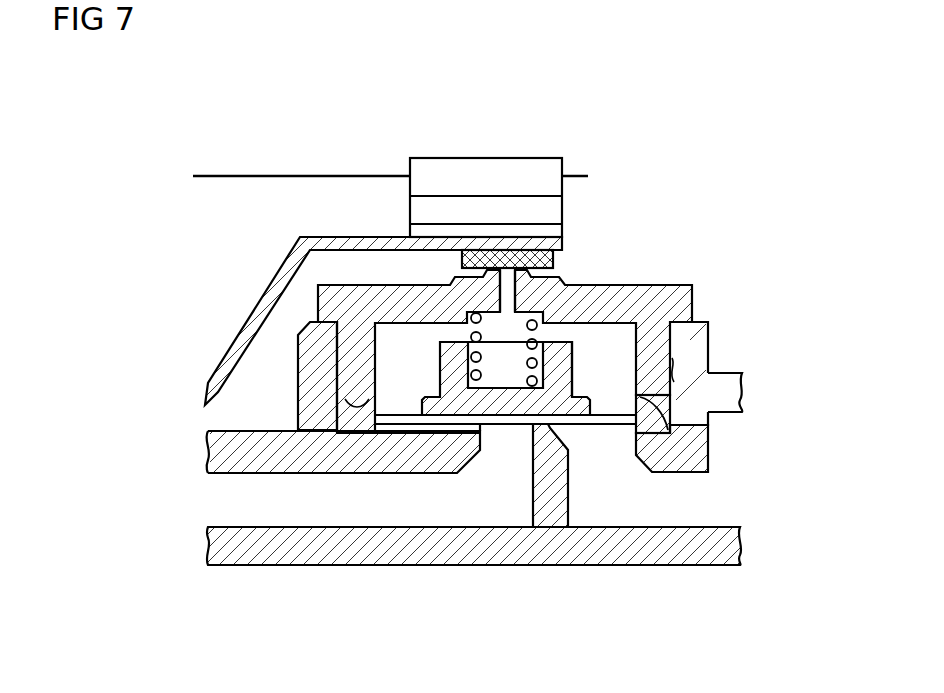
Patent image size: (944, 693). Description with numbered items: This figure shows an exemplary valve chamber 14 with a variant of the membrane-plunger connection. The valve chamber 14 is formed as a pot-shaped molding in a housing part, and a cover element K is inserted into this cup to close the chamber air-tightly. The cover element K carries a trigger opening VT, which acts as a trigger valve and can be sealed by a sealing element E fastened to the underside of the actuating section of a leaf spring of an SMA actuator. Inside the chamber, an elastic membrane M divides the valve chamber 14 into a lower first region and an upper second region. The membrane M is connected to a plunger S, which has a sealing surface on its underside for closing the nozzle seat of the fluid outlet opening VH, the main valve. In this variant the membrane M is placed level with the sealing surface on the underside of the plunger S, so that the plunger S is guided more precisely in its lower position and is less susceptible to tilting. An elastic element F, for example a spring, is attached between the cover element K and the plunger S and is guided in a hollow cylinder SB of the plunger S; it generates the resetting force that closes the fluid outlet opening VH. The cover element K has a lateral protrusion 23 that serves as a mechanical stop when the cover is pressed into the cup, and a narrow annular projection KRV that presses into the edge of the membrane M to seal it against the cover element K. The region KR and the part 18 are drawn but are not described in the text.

The valve chamber 14 is at (636, 171).
The sealing element E is at (488, 257).
The hollow cylinder SB is at (450, 367).
The trigger opening VT is at (508, 293).
The cover element K is at (617, 295).
The coolant channel KR is at (657, 357).
The coolant line 18 is at (680, 388).
The projection KRV is at (720, 425).
The lateral protrusion 23 is at (337, 373).
The plunger S is at (487, 410).
The elastic element F is at (526, 366).
The fluid outlet opening VH is at (500, 445).
The membrane M is at (575, 405).